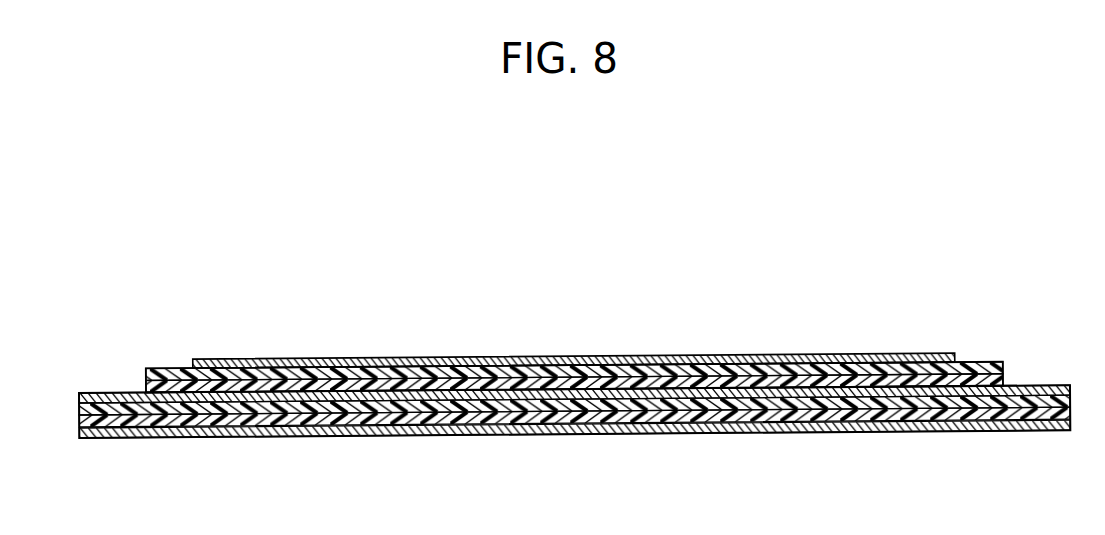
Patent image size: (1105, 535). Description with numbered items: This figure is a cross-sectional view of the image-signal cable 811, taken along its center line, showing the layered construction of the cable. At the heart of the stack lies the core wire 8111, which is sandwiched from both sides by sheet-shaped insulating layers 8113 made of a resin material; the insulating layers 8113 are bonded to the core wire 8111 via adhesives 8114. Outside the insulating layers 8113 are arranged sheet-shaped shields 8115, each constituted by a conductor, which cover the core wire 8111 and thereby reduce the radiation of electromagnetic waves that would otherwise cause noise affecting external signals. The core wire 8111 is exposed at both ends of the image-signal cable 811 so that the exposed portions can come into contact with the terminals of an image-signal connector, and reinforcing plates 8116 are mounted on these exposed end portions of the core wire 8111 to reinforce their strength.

The image-signal cable 811 is at (585, 267).
The core wire 8111 is at (113, 392).
The insulating layer 8113 is at (572, 368).
The adhesive 8114 is at (383, 381).
The shield 8115 is at (760, 371).
The reinforcing plate 8116 is at (133, 432).